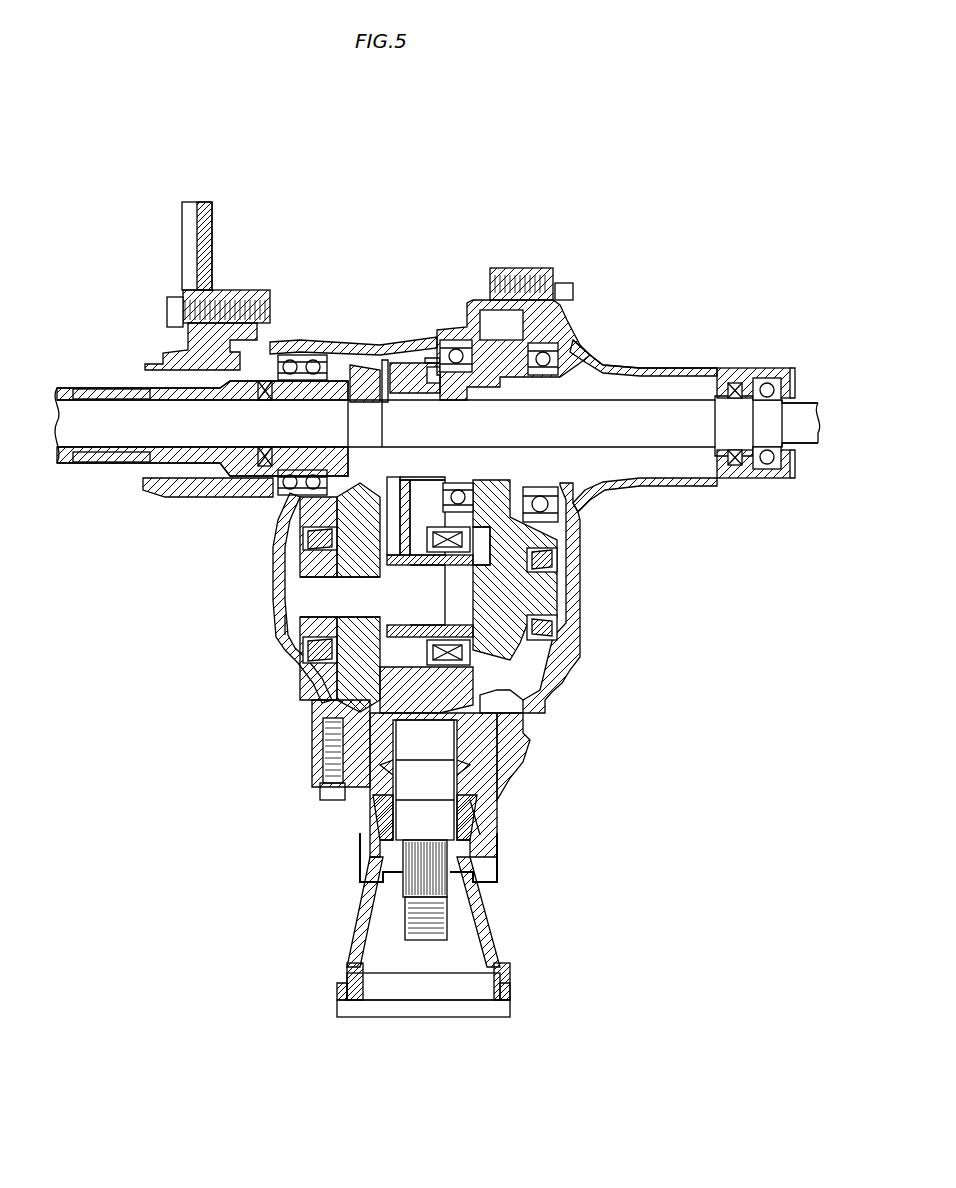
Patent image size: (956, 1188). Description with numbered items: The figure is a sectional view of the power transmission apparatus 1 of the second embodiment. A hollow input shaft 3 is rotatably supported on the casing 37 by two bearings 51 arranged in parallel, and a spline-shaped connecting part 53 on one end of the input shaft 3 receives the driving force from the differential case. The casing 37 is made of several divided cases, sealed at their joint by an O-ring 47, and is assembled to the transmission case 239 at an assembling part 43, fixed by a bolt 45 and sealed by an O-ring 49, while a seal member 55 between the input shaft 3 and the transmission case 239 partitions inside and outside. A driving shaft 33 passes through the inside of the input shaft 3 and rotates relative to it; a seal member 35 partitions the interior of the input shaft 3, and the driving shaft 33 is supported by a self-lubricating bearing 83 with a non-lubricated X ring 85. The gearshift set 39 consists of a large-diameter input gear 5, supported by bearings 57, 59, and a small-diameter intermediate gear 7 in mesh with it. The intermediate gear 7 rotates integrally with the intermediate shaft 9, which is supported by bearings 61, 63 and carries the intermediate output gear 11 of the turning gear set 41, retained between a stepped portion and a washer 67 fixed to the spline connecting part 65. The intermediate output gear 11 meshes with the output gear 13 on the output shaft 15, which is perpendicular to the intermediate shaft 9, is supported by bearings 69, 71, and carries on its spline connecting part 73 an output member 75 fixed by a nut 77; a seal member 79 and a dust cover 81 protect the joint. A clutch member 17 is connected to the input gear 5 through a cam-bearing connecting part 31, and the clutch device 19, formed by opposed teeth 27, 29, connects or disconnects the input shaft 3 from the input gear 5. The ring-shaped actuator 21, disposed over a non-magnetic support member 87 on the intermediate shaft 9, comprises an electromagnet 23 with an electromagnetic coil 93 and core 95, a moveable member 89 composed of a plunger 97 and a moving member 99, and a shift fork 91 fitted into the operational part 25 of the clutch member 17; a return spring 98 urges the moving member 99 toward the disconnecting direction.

The power transmission apparatus 1 is at (427, 190).
The input shaft 3 is at (213, 400).
The input gear 5 is at (470, 312).
The intermediate gear 7 is at (510, 660).
The intermediate shaft 9 is at (558, 593).
The intermediate output gear 11 is at (345, 502).
The output gear 13 is at (492, 690).
The output shaft 15 is at (418, 816).
The clutch member 17 is at (431, 351).
The clutch device 19 is at (385, 363).
The actuator 21 is at (436, 492).
The electromagnet 23 is at (462, 517).
The operational part 25 is at (411, 473).
The opposed teeth 27 is at (360, 370).
The opposed teeth 29 is at (400, 370).
The connecting part 31 is at (437, 368).
The driving shaft 33 is at (795, 412).
The seal member 35 is at (345, 348).
The casing 37 is at (634, 357).
The gearshift set 39 is at (530, 502).
The turning gear set 41 is at (325, 632).
The assembling part 43 is at (268, 343).
The bolt 45 is at (178, 297).
The O-ring 47 is at (505, 738).
The O-ring 49 is at (240, 500).
The bearings 51 is at (300, 352).
The connecting part 53 is at (93, 379).
The seal member 55 is at (264, 393).
The bearing 57 is at (455, 345).
The bearing 59 is at (545, 325).
The bearing 61 is at (532, 623).
The bearing 63 is at (315, 678).
The connecting part 65 is at (316, 576).
The washer 67 is at (287, 623).
The bearing 69 is at (485, 790).
The bearing 71 is at (470, 805).
The connecting part 73 is at (412, 873).
The output member 75 is at (497, 974).
The nut 77 is at (407, 917).
The seal member 79 is at (470, 887).
The dust cover 81 is at (382, 882).
The bearing 83 is at (764, 383).
The X ring 85 is at (738, 383).
The support member 87 is at (522, 645).
The moveable member 89 is at (480, 608).
The shift fork 91 is at (360, 575).
The electromagnetic coil 93 is at (470, 547).
The core 95 is at (470, 533).
The plunger 97 is at (452, 616).
The return spring 98 is at (394, 654).
The moving member 99 is at (392, 570).
The transmission case 239 is at (218, 216).